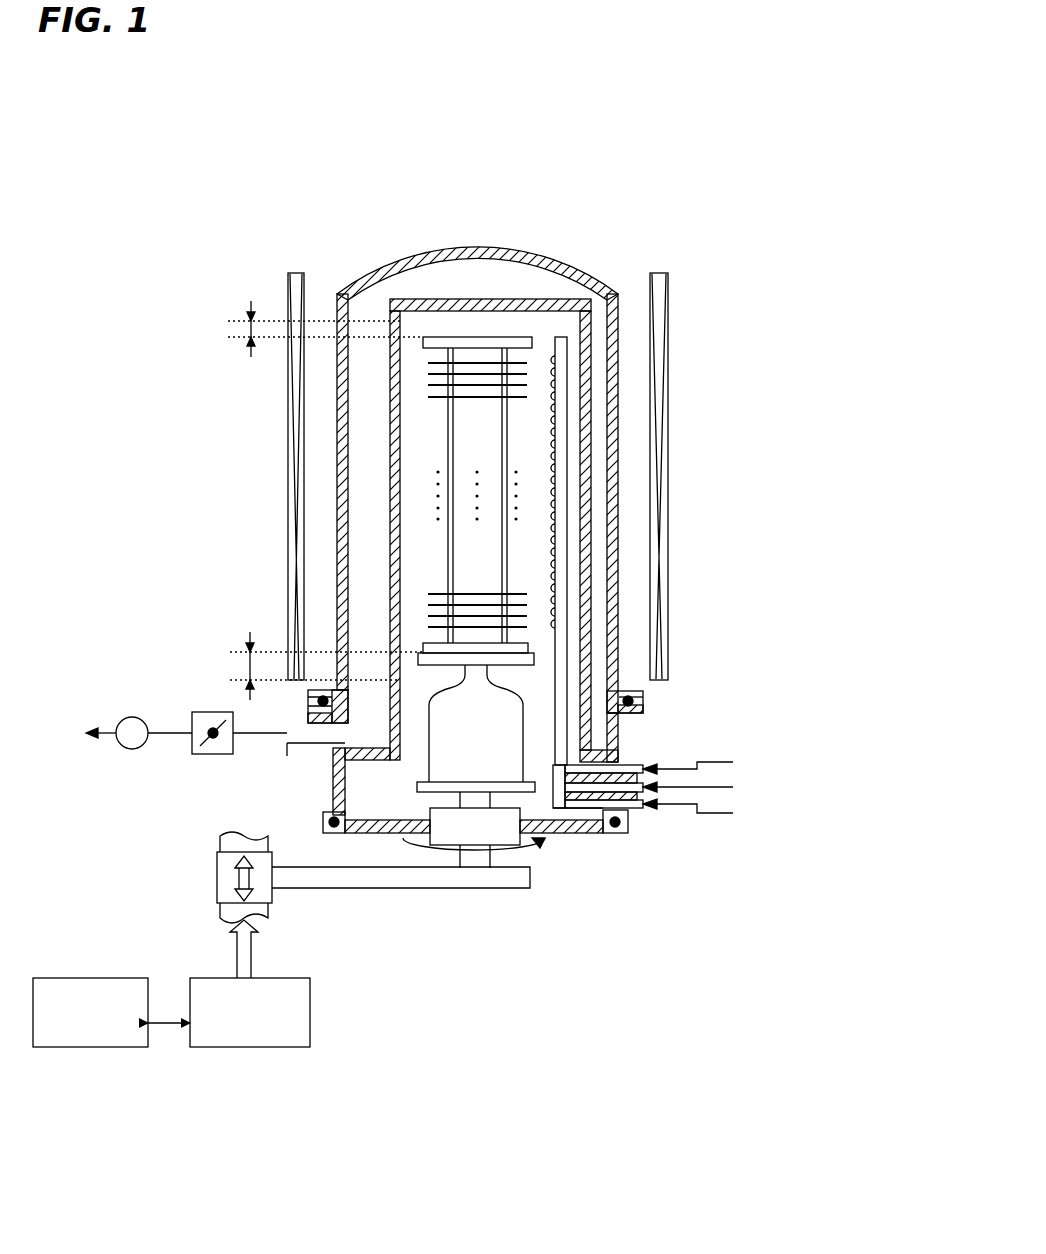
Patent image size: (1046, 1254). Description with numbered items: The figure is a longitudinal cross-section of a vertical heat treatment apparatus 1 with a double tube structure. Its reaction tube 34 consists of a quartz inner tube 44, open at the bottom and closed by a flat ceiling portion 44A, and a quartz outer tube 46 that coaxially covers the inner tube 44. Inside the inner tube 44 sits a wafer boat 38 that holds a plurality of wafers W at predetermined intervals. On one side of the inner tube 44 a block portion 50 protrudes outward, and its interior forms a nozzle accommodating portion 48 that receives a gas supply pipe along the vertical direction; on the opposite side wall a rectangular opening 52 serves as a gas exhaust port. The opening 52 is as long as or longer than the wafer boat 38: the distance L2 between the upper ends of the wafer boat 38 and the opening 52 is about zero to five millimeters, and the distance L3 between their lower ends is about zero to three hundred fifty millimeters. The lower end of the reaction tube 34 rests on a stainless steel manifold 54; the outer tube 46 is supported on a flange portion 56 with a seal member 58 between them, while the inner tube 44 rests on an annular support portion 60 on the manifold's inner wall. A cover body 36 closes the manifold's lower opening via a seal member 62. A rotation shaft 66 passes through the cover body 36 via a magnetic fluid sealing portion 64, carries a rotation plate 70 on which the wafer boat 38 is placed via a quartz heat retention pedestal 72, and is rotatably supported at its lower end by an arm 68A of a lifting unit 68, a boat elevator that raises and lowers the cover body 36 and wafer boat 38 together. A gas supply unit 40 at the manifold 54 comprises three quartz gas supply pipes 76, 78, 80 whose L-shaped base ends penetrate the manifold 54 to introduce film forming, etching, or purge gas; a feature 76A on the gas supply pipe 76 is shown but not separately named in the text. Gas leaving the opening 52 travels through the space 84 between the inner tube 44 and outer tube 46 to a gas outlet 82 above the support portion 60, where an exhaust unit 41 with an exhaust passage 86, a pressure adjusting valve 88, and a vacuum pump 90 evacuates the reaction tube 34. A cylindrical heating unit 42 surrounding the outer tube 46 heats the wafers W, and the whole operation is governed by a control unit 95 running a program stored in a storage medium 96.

The vertical heat treatment apparatus 1 is at (78, 164).
The reaction tube 34 is at (603, 195).
The cover body 36 is at (570, 836).
The wafer boat 38 is at (536, 407).
The gas supply unit 40 is at (724, 809).
The exhaust unit 41 is at (128, 688).
The heating unit 42 is at (668, 290).
The inner tube 44 is at (490, 479).
The ceiling portion 44A is at (490, 304).
The outer tube 46 is at (591, 278).
The nozzle accommodating portion 48 is at (573, 427).
The block portion 50 is at (593, 468).
The opening 52 is at (390, 432).
The manifold 54 is at (618, 738).
The flange portion 56 is at (658, 694).
The seal member 58 is at (640, 693).
The support portion 60 is at (368, 758).
The seal member 62 is at (614, 835).
The magnetic fluid sealing portion 64 is at (507, 853).
The rotation shaft 66 is at (477, 860).
The lifting unit 68 is at (217, 912).
The arm 68A is at (400, 888).
The rotation plate 70 is at (422, 792).
The heat retention pedestal 72 is at (418, 772).
The gas supply pipe 76 is at (645, 551).
The gas holes 76A is at (557, 552).
The gas supply pipe 78 is at (637, 800).
The gas supply pipe 80 is at (630, 806).
The gas outlet 82 is at (310, 734).
The space 84 is at (358, 472).
The exhaust passage 86 is at (168, 734).
The pressure adjusting valve 88 is at (213, 755).
The vacuum pump 90 is at (132, 750).
The control unit 95 is at (242, 1047).
The storage medium 96 is at (93, 1047).
The wafer W is at (440, 398).
The distance L2 is at (250, 330).
The distance L3 is at (249, 665).